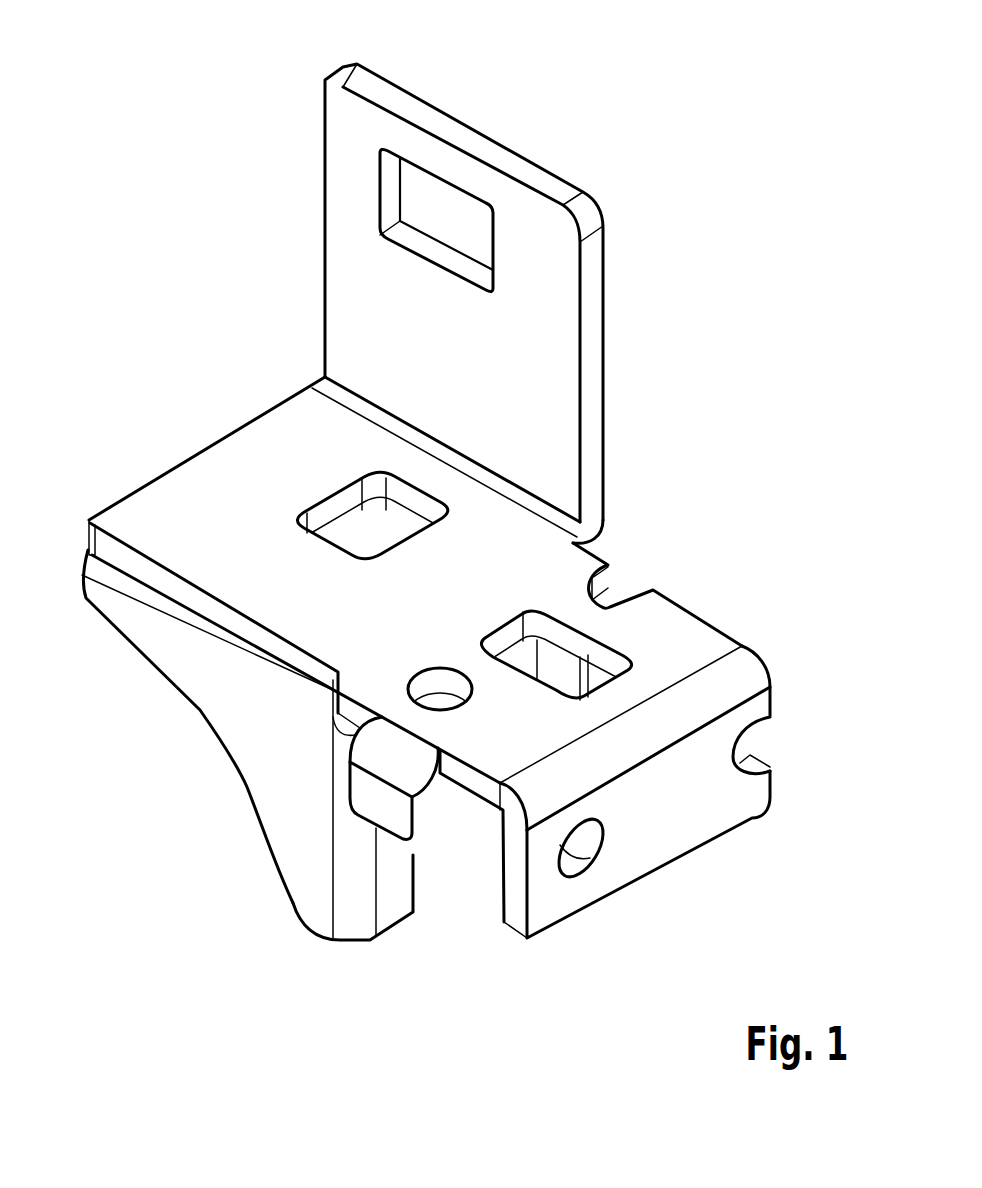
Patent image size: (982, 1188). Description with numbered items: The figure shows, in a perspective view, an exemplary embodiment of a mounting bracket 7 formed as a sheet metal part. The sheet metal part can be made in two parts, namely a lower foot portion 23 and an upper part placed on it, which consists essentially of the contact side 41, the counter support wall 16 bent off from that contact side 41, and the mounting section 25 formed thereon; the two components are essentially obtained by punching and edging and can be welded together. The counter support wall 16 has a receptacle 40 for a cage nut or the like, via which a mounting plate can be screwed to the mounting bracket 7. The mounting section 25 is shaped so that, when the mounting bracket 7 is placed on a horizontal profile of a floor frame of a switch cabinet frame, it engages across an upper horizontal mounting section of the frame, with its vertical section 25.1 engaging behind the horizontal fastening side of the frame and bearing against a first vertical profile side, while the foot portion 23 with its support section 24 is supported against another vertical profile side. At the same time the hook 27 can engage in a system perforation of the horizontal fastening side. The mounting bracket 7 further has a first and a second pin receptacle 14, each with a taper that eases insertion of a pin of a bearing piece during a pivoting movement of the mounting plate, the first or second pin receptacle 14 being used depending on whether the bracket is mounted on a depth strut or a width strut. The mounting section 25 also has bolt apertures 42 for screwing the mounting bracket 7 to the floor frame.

The mounting bracket 7 is at (620, 100).
The pin receptacle 14 is at (353, 540).
The counter support wall 16 is at (362, 137).
The foot portion 23 is at (265, 787).
The support section 24 is at (393, 898).
The mounting section 25 is at (745, 673).
The vertical section 25.1 is at (690, 817).
The hook 27 is at (423, 808).
The receptacle 40 is at (448, 230).
The contact side 41 is at (178, 524).
The bolt apertures 42 is at (438, 690).